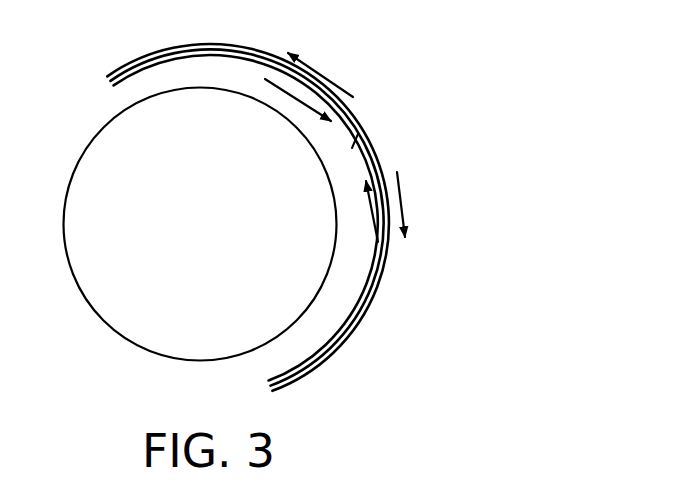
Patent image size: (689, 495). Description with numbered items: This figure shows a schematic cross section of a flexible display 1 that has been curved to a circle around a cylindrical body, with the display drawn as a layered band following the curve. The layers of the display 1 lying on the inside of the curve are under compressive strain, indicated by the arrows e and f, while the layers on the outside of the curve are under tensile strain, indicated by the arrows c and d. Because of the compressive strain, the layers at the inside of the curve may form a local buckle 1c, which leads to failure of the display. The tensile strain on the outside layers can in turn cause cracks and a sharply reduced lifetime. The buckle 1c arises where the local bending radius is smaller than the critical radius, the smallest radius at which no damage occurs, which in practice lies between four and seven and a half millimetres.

The flexible display 1 is at (373, 303).
The buckle 1c is at (358, 158).
The tensile strain arrow c is at (320, 70).
The tensile strain arrow d is at (402, 205).
The compressive strain arrow e is at (294, 100).
The compressive strain arrow f is at (368, 207).